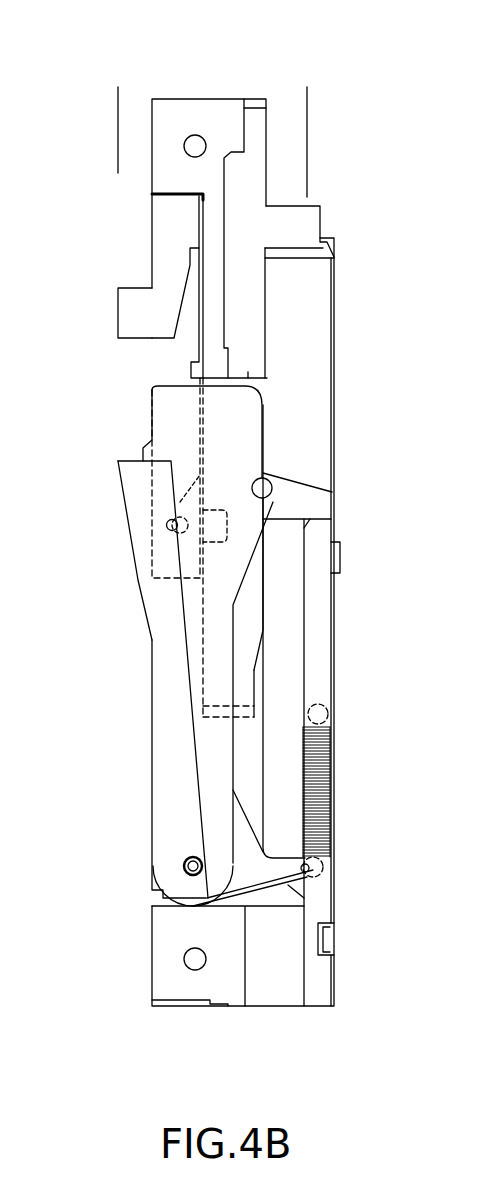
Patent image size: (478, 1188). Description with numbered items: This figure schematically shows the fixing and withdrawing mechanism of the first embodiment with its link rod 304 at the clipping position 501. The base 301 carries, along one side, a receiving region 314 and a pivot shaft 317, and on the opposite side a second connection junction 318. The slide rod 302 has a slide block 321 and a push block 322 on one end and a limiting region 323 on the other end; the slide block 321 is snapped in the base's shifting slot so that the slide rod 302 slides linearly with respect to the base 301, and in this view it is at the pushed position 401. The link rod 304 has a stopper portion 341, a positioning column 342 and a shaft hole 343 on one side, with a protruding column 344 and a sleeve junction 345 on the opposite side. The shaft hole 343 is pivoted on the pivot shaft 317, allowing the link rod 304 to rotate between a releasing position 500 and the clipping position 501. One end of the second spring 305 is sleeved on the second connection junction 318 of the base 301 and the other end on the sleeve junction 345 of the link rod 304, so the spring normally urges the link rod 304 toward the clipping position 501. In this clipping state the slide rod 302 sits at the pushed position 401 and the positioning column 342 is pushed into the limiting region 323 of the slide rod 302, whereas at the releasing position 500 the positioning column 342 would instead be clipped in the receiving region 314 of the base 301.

The base 301 is at (190, 104).
The clipping position 501 is at (118, 118).
The releasing position 500 is at (308, 130).
The pushed position 401 is at (145, 193).
The slide block 321 is at (165, 240).
The push block 322 is at (130, 312).
The slide rod 302 is at (150, 365).
The link rod 304 is at (158, 726).
The stopper portion 341 is at (138, 480).
The limiting region 323 is at (187, 508).
The positioning column 342 is at (170, 525).
The protruding column 344 is at (262, 488).
The receiving region 314 is at (213, 527).
The second connection junction 318 is at (328, 712).
The second spring 305 is at (332, 803).
The pivot shaft 317 is at (184, 862).
The sleeve junction 345 is at (325, 870).
The shaft hole 343 is at (193, 876).